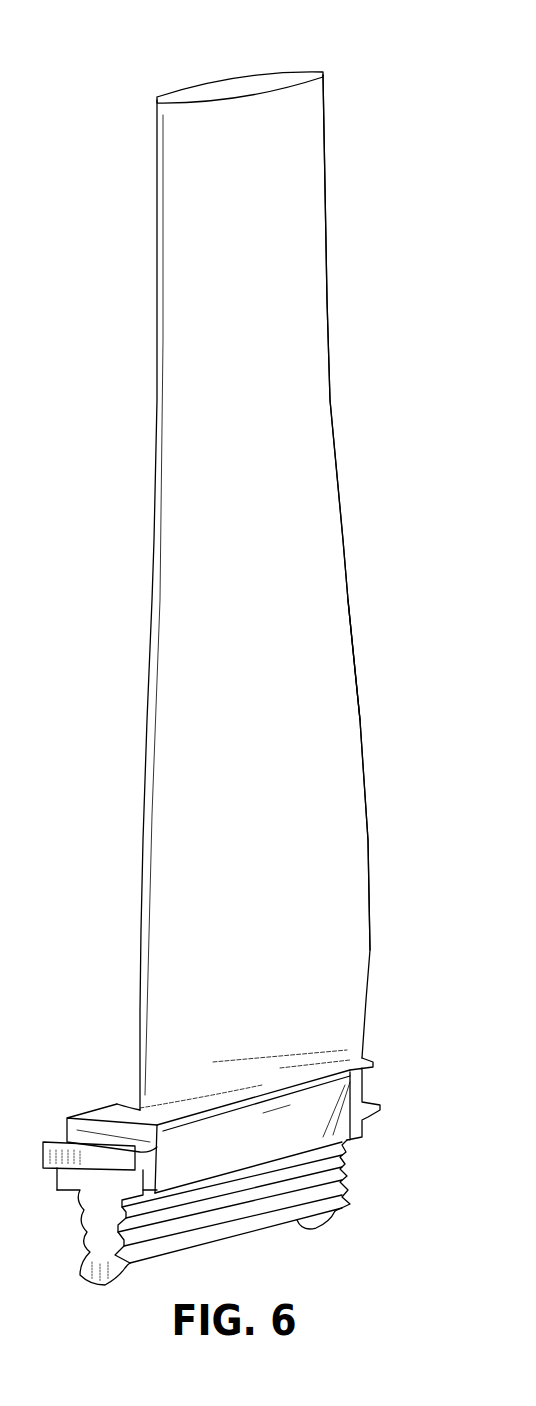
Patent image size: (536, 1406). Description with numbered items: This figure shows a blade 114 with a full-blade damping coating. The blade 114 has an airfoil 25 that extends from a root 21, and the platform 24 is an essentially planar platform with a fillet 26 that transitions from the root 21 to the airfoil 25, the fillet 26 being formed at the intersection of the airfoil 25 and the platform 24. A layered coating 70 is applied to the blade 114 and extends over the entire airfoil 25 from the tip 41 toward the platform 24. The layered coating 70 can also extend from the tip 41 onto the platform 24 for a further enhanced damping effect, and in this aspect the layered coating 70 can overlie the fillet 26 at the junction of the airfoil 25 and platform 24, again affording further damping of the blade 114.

The root 21 is at (353, 1163).
The platform 24 is at (118, 1103).
The airfoil 25 is at (238, 381).
The fillet 26 is at (327, 1053).
The tip 41 is at (250, 80).
The layered coating 70 is at (300, 697).
The blade 114 is at (380, 487).